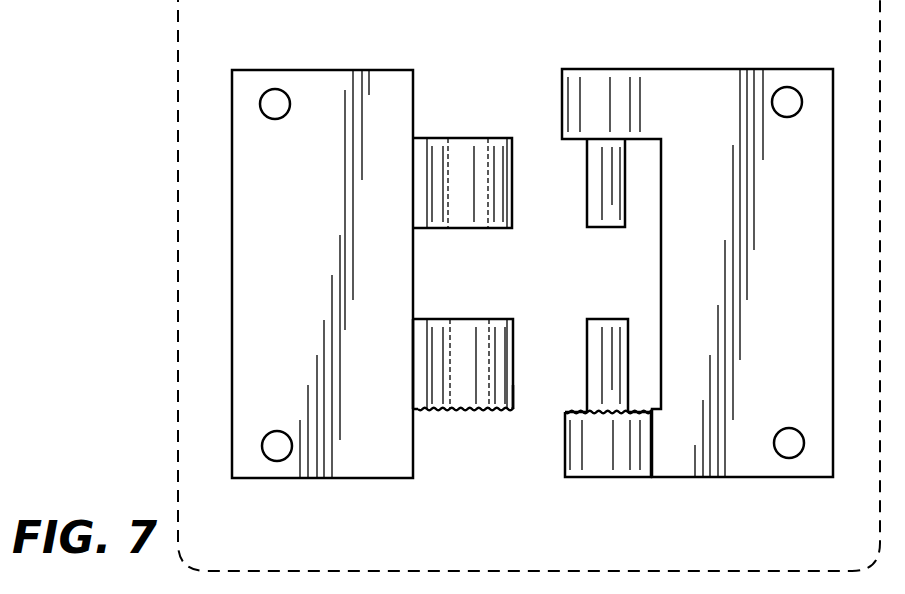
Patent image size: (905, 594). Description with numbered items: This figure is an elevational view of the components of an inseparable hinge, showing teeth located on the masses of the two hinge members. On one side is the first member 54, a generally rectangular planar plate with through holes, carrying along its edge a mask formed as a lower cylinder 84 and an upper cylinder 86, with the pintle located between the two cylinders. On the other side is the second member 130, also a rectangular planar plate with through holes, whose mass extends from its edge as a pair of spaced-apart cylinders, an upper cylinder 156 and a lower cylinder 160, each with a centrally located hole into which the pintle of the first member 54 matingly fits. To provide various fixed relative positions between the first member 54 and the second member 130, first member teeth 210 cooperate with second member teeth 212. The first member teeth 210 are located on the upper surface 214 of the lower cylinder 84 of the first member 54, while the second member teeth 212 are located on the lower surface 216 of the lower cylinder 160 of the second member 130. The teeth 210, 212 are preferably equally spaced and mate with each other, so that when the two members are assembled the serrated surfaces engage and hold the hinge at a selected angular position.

The second member 130 is at (297, 52).
The first member 54 is at (748, 48).
The lower cylinder 84 is at (596, 73).
The upper cylinder 86 is at (598, 476).
The upper cylinder 156 is at (437, 138).
The lower cylinder 160 is at (500, 319).
The first member teeth 210 is at (580, 402).
The second member teeth 212 is at (438, 426).
The upper surface 214 is at (565, 418).
The lower surface 216 is at (515, 394).